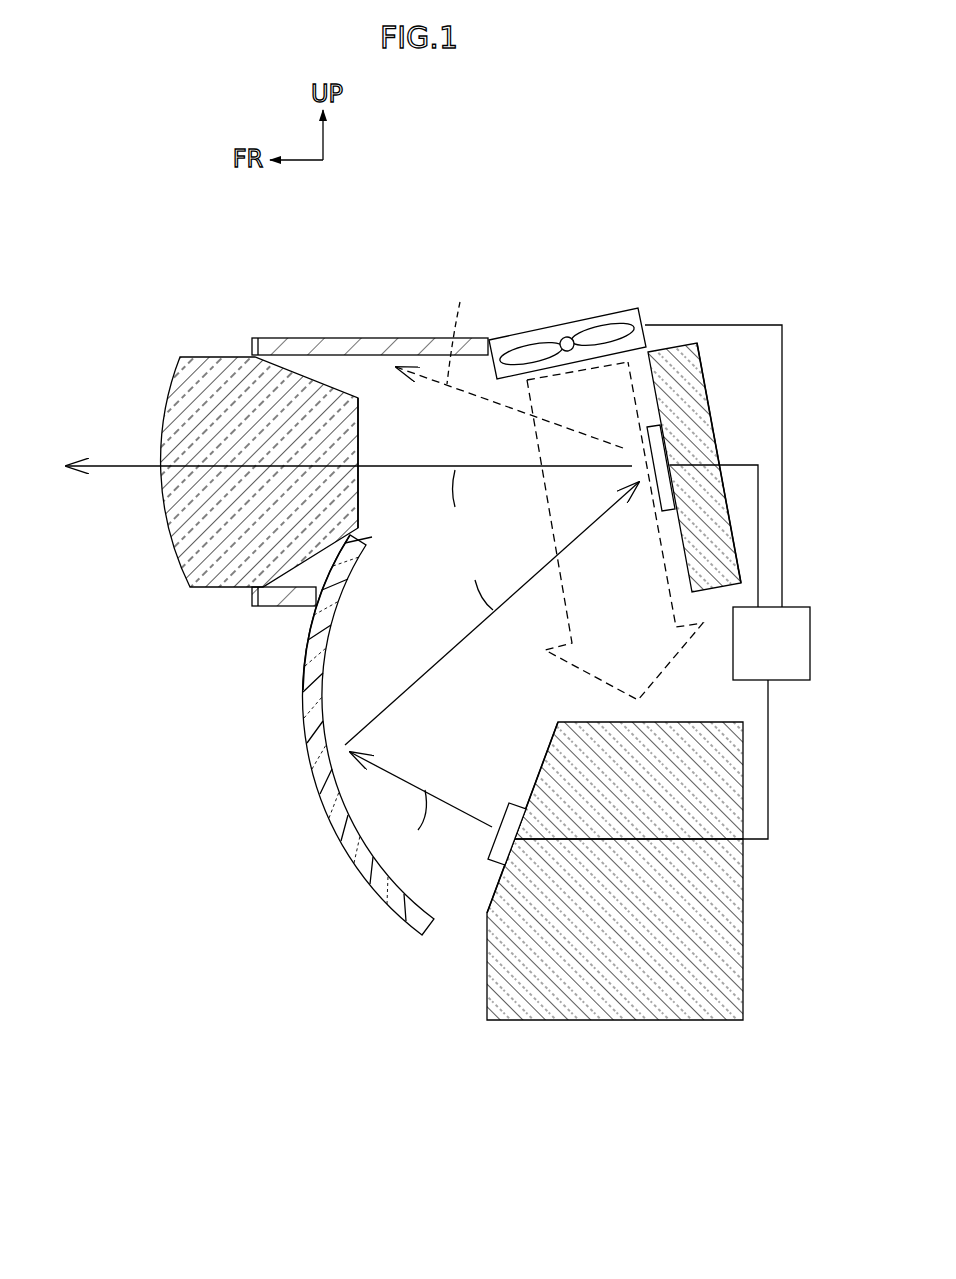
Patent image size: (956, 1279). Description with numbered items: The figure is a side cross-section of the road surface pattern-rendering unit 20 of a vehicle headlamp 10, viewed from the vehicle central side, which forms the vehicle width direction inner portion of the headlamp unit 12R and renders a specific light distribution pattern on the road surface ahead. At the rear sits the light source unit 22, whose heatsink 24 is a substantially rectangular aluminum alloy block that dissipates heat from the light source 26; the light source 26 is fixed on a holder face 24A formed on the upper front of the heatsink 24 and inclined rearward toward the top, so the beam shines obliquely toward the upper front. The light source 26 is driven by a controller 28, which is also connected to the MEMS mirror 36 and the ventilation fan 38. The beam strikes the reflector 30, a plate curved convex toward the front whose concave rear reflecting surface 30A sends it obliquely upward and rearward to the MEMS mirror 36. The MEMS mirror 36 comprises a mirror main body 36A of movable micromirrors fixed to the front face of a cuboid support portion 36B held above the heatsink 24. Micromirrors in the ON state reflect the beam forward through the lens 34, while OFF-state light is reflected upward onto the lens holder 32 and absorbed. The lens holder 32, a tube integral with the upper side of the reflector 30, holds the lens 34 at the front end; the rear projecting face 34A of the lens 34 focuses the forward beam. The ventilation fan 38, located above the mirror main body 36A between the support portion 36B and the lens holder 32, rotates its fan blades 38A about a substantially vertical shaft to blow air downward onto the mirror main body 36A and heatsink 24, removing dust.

The vehicle headlamp 10 is at (441, 635).
The headlamp unit 12R is at (162, 247).
The road surface pattern-rendering unit 20 is at (128, 328).
The light source unit 22 is at (482, 1026).
The heatsink 24 is at (612, 1022).
The holder face 24A is at (543, 757).
The light source 26 is at (490, 826).
The controller 28 is at (797, 682).
The reflector 30 is at (335, 835).
The reflecting surface 30A is at (330, 642).
The lens holder 32 is at (330, 337).
The lens 34 is at (167, 543).
The projecting face 34A is at (358, 436).
The MEMS mirror 36 is at (710, 349).
The mirror main body 36A is at (666, 514).
The support portion 36B is at (703, 437).
The ventilation fan 38 is at (630, 310).
The fan blades 38A is at (597, 328).